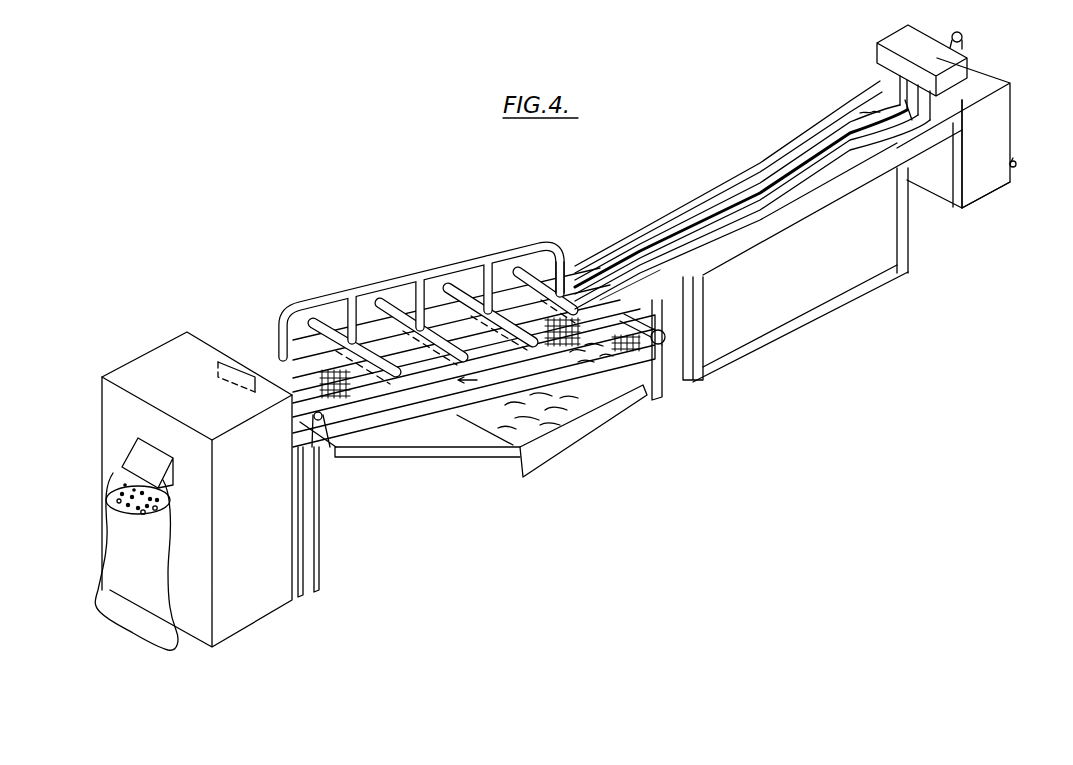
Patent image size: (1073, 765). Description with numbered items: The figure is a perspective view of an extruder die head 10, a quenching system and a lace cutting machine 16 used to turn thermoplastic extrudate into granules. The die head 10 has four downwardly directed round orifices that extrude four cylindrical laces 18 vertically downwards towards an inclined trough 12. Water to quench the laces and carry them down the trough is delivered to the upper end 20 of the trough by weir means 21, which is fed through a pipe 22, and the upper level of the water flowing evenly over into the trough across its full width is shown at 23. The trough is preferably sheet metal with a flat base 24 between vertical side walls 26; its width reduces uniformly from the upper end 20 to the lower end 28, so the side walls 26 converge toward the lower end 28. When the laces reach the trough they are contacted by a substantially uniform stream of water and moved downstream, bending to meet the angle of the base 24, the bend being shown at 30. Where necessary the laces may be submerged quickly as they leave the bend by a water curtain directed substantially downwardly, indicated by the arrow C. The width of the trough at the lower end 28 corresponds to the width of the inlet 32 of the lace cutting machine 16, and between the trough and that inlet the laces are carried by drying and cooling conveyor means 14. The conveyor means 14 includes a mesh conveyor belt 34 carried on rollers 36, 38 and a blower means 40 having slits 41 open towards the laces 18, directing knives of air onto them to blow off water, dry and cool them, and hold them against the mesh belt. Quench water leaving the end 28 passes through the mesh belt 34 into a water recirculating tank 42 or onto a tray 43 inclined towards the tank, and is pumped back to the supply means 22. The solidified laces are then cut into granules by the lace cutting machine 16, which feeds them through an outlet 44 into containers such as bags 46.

The die head 10 is at (901, 38).
The inclined trough 12 is at (817, 197).
The conveyor means 14 is at (384, 407).
The lace cutting machine 16 is at (137, 370).
The cylindrical laces 18 is at (899, 84).
The upper end of the trough 20 is at (958, 200).
The weir means 21 is at (990, 186).
The pipe 22 is at (1014, 168).
The upper level of the water 23 is at (977, 93).
The flat base 24 is at (722, 208).
The vertical side walls 26 is at (676, 220).
The lower end of the trough 28 is at (580, 273).
The bend in the laces 30 is at (913, 122).
The inlet of the lace-cutting machine 32 is at (212, 362).
The mesh conveyor belt 34 is at (617, 350).
The roller 36 is at (318, 428).
The roller 38 is at (662, 340).
The blower means 40 is at (293, 327).
The slits 41 is at (253, 350).
The water recirculating tank 42 is at (573, 440).
The tray 43 is at (466, 451).
The outlet 44 is at (137, 463).
The bags 46 is at (120, 570).
The water curtain C is at (880, 108).